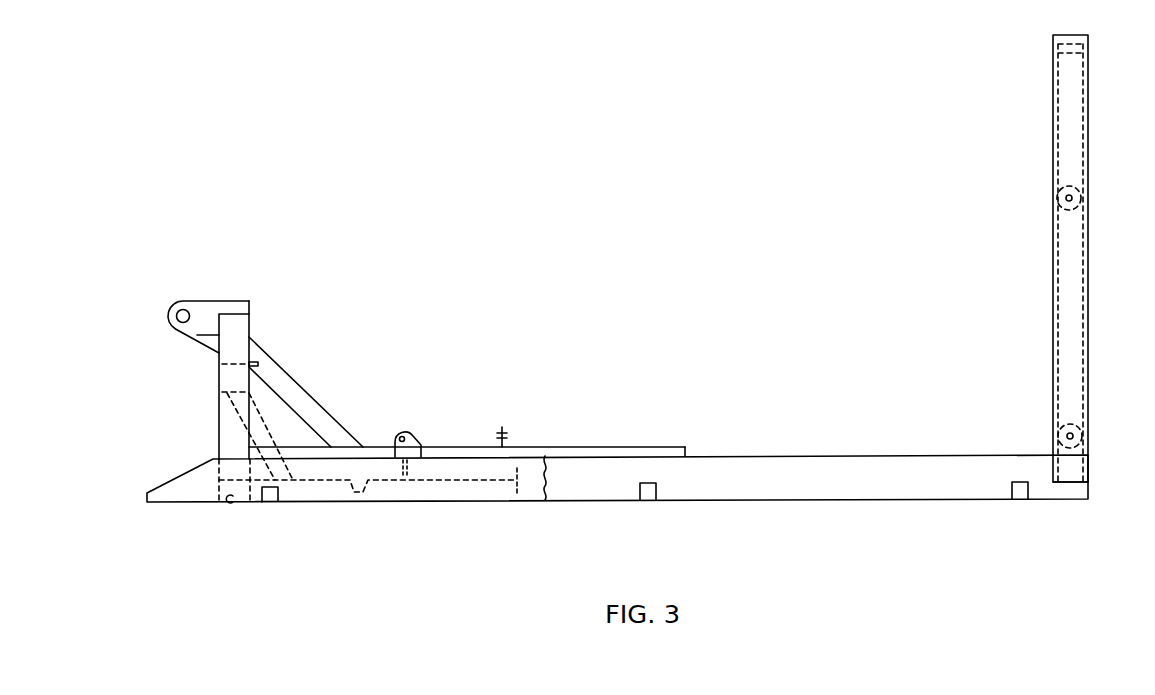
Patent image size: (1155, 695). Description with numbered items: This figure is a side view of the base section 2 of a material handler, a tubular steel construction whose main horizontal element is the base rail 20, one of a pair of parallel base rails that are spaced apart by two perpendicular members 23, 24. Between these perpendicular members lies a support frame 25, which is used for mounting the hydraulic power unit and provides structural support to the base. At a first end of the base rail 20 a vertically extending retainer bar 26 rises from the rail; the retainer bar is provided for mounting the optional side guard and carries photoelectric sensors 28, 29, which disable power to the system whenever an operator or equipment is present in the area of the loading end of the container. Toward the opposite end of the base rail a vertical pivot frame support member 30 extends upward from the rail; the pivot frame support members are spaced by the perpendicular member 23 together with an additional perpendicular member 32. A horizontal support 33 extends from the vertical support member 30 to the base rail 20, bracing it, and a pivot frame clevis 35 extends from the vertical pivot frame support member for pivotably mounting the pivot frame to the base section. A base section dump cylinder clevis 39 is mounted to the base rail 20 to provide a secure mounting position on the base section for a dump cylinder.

The base section 2 is at (665, 298).
The base rail 20 is at (827, 495).
The perpendicular member 23 is at (232, 505).
The perpendicular member 24 is at (534, 496).
The support frame 25 is at (447, 473).
The retainer bar 26 is at (1082, 335).
The photoelectric sensor 28 is at (1082, 198).
The photoelectric sensor 29 is at (1083, 438).
The vertical pivot frame support member 30 is at (237, 327).
The additional perpendicular member 32 is at (222, 374).
The horizontal support 33 is at (306, 403).
The pivot frame clevis 35 is at (202, 307).
The base section dump cylinder clevis 39 is at (419, 444).